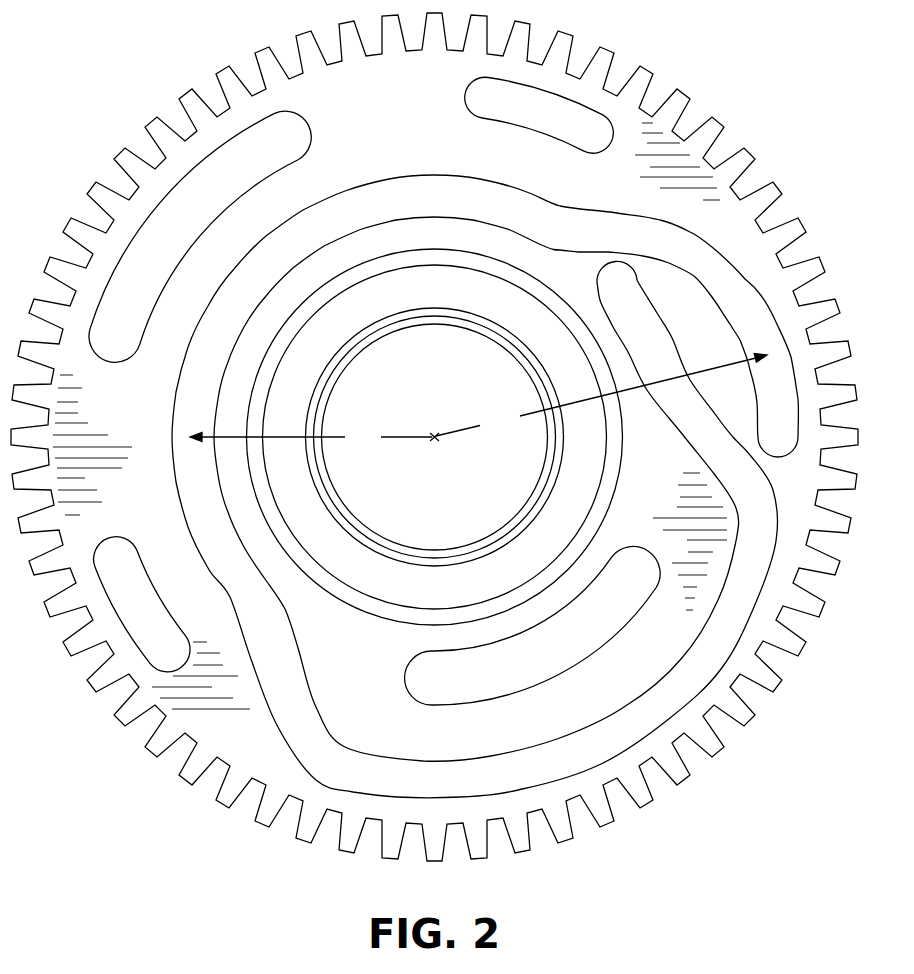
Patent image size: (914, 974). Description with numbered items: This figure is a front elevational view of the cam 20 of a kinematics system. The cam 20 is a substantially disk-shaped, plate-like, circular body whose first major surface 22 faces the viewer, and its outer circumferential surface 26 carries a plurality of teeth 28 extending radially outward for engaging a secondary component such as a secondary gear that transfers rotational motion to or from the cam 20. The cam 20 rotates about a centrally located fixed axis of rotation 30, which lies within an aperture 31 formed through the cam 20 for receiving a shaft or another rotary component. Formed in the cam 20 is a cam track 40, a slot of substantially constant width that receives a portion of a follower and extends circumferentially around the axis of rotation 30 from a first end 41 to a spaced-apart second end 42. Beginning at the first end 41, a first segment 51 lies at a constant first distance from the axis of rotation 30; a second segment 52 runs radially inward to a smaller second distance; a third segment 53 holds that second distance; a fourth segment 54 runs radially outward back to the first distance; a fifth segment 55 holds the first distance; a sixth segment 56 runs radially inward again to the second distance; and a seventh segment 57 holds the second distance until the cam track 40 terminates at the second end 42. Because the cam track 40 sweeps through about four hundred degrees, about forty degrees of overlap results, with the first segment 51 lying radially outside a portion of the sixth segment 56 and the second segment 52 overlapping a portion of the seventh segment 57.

The cam 20 is at (724, 121).
The first major surface 22 is at (403, 110).
The outer circumferential surface 26 is at (178, 128).
The teeth 28 is at (108, 158).
The axis of rotation 30 is at (443, 428).
The aperture 31 is at (350, 362).
The cam track 40 is at (521, 470).
The first end 41 is at (777, 445).
The second end 42 is at (617, 280).
The first segment 51 is at (764, 387).
The second segment 52 is at (710, 263).
The third segment 53 is at (387, 198).
The fourth segment 54 is at (240, 587).
The fifth segment 55 is at (464, 770).
The sixth segment 56 is at (752, 513).
The seventh segment 57 is at (660, 345).